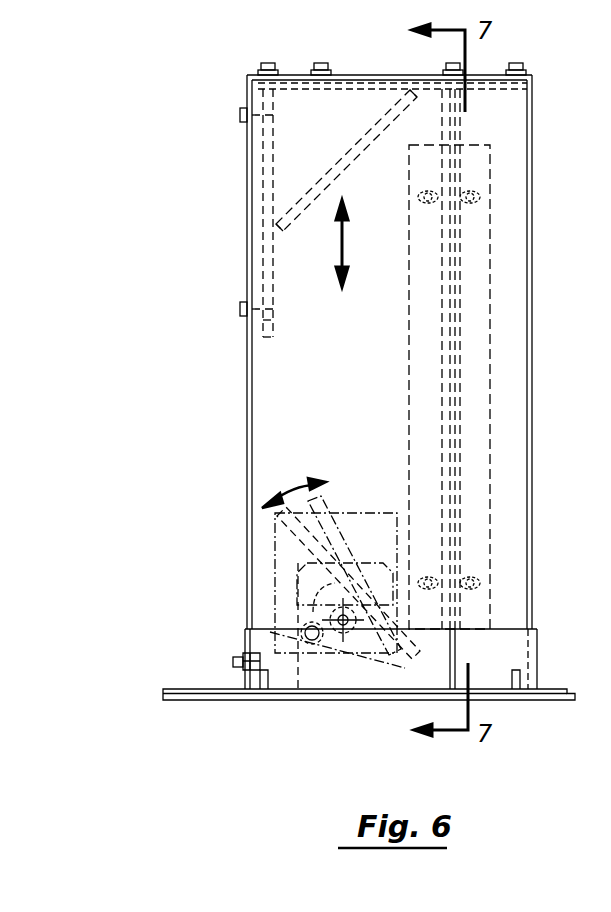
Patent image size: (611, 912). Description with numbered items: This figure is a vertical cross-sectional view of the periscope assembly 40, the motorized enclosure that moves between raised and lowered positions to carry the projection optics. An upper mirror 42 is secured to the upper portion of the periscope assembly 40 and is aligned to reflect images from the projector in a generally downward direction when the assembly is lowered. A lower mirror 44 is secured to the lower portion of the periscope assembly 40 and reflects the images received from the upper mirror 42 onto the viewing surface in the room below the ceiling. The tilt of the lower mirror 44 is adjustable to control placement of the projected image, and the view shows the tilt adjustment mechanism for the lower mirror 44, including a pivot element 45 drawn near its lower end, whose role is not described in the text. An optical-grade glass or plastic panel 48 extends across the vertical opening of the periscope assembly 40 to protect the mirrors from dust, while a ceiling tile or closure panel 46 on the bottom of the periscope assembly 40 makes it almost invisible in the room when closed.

The periscope assembly 40 is at (230, 228).
The upper mirror 42 is at (371, 142).
The lower mirror 44 is at (337, 540).
The roller 45 is at (308, 617).
The ceiling tile or closure panel 46 is at (295, 702).
The optical-grade glass or plastic panel 48 is at (455, 367).